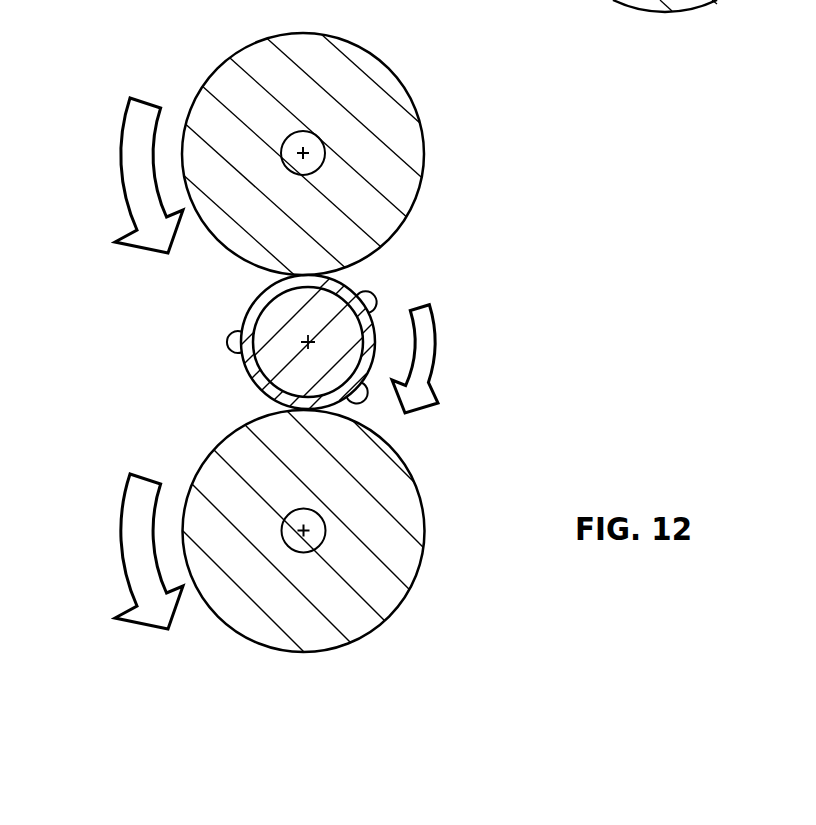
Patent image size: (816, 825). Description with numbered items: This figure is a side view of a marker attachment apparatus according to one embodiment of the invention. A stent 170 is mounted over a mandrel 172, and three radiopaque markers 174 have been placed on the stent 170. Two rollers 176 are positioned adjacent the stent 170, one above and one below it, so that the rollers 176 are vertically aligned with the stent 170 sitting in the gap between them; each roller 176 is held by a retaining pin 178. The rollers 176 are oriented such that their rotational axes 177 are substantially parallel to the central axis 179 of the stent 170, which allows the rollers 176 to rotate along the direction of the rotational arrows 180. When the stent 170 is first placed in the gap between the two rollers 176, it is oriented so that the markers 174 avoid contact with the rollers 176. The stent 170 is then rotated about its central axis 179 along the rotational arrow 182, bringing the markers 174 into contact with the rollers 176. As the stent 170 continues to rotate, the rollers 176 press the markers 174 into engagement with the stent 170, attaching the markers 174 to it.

The stent 170 is at (243, 364).
The mandrel 172 is at (256, 386).
The radiopaque markers 174 is at (227, 340).
The rollers 176 is at (422, 123).
The rotational axes 177 is at (288, 148).
The retaining pin 178 is at (326, 160).
The central axis 179 is at (307, 342).
The rotational arrows 180 is at (122, 130).
The rotational arrow 182 is at (437, 338).